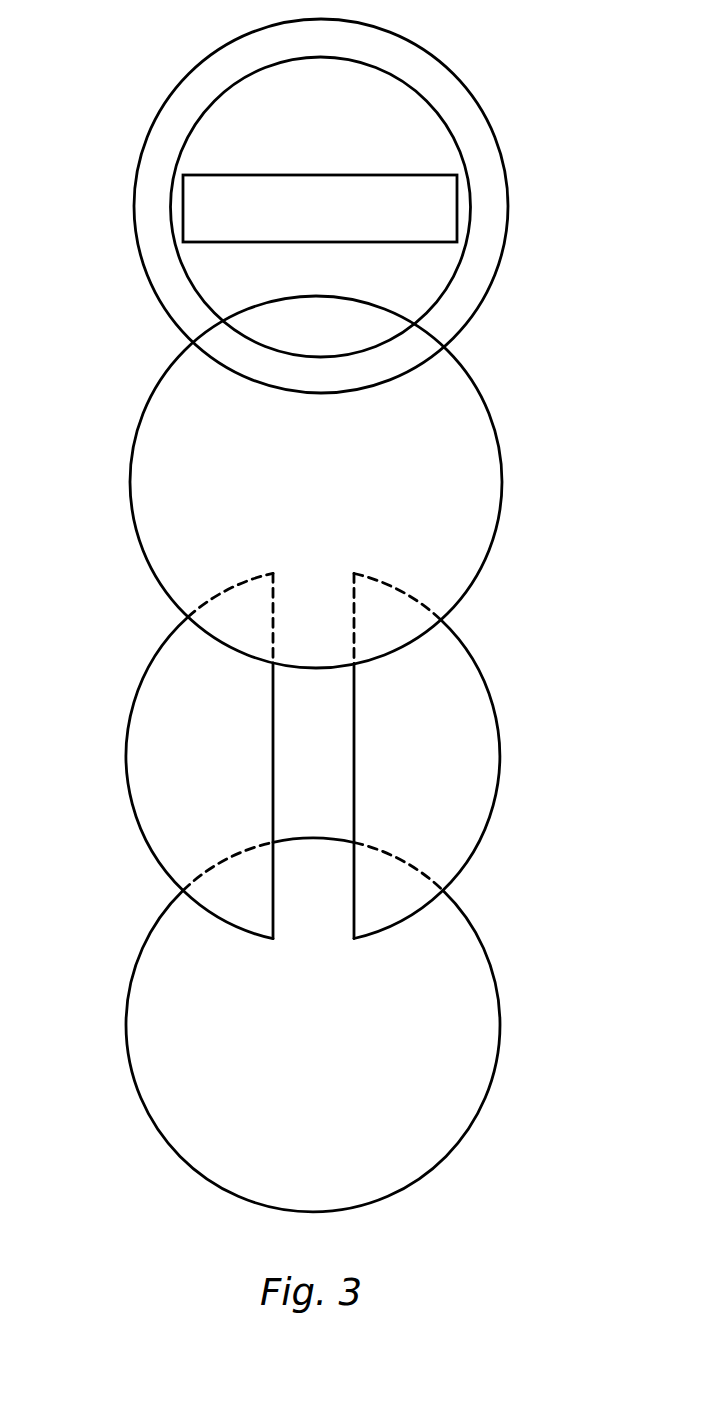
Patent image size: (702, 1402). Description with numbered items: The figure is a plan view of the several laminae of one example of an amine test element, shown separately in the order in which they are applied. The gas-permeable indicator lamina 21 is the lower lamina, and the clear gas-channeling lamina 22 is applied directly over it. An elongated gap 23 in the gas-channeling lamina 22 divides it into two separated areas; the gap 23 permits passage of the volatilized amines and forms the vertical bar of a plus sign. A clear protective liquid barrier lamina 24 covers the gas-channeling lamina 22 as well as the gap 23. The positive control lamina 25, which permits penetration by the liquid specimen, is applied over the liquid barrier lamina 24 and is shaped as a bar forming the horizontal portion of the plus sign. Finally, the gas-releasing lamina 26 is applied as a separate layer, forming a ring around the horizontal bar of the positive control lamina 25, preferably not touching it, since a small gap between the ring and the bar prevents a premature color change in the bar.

The gas-permeable indicator lamina 21 is at (455, 1013).
The clear gas-channeling lamina 22 is at (457, 772).
The elongated gap 23 is at (300, 788).
The protective liquid barrier lamina 24 is at (462, 482).
The positive control lamina 25 is at (232, 203).
The gas-releasing lamina 26 is at (475, 162).